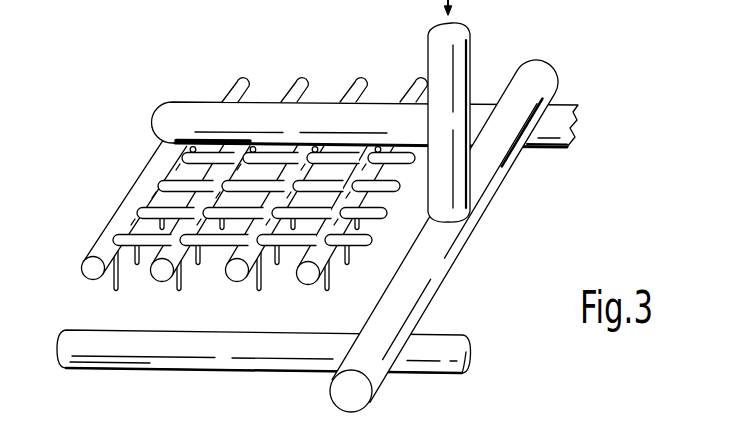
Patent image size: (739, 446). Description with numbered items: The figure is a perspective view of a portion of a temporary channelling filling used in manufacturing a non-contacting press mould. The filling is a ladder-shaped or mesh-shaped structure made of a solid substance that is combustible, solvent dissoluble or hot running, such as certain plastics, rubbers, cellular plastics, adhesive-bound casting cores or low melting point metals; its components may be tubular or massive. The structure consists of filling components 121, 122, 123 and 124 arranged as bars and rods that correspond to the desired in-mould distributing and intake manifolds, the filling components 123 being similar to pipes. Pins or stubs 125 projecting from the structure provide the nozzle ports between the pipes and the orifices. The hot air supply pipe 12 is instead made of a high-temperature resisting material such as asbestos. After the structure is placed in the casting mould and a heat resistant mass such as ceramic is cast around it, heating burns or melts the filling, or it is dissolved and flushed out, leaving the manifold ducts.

The hot air supply pipe 12 is at (472, 58).
The filling component of ladder-shaped structure 121 is at (428, 284).
The filling component of ladder-shaped structure 122 is at (318, 117).
The filling component 123 is at (150, 197).
The filling component of ladder-shaped structure 124 is at (280, 270).
The pin or stub 125 is at (177, 277).